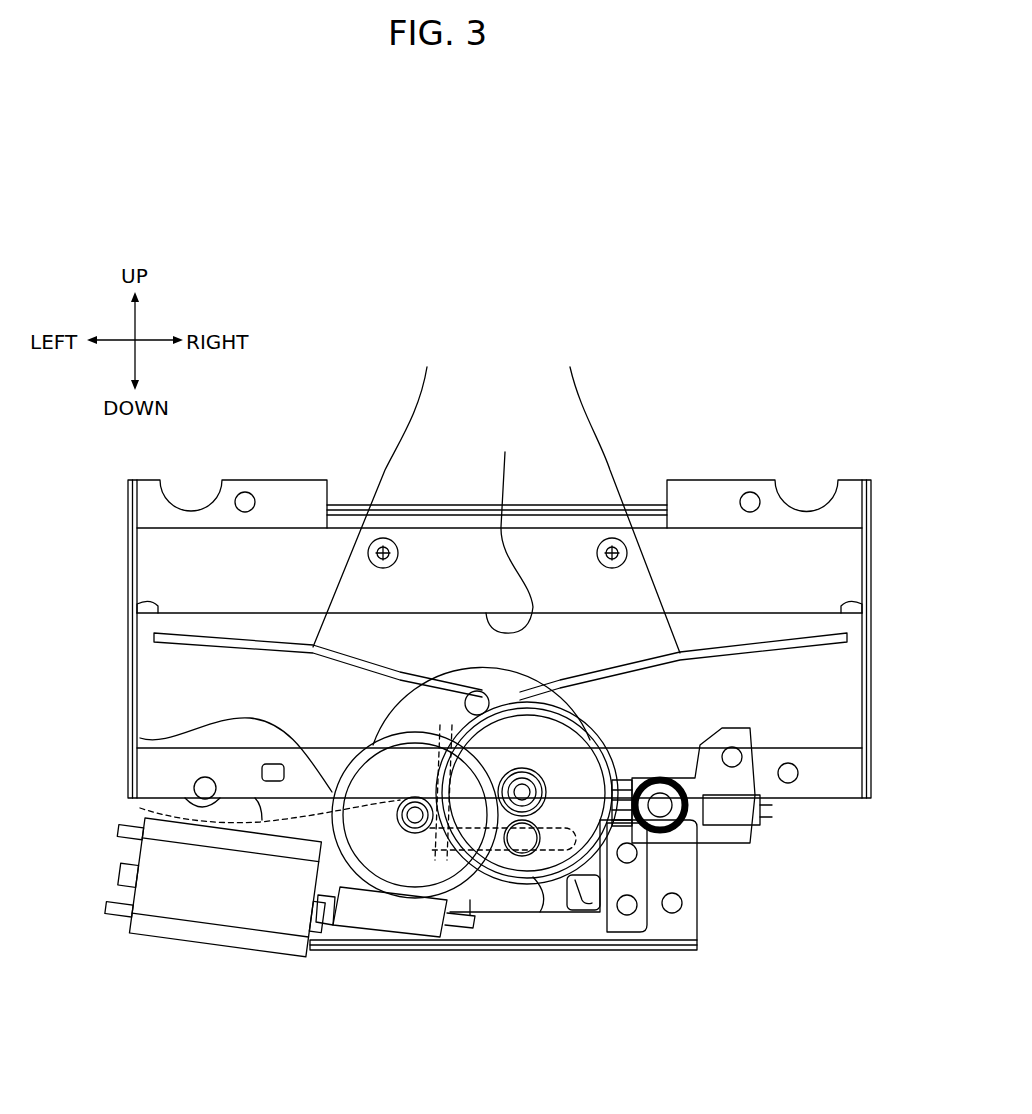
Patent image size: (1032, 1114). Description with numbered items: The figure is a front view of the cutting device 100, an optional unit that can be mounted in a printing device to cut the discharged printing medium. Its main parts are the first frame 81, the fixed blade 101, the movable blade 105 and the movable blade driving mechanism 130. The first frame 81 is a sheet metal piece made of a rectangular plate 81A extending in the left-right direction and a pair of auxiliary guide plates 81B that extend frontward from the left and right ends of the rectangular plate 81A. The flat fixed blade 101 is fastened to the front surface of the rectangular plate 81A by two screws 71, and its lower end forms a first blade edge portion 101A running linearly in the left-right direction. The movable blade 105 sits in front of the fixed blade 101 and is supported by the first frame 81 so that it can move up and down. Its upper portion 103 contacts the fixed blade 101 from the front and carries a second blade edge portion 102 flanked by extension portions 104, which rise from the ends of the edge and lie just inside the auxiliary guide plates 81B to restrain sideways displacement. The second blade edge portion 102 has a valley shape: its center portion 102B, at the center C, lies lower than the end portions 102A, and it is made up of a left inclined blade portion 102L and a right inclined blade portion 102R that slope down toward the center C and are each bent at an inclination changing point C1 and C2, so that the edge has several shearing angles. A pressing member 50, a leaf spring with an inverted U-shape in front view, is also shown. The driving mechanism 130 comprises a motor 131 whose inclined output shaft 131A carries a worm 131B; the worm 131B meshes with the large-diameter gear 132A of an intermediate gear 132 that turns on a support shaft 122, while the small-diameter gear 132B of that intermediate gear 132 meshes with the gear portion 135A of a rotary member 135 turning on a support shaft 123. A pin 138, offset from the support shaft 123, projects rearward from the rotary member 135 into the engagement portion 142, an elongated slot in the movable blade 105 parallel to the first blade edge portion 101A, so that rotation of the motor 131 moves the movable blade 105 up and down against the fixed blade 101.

The cutting device 100 is at (683, 345).
The fixed blade 101 is at (704, 525).
The first blade edge portion 101A is at (511, 530).
The second blade edge portion 102 is at (598, 345).
The left inclined blade portion 102L is at (384, 495).
The right inclined blade portion 102R is at (612, 498).
The end portions 102A is at (247, 632).
The center portion 102B is at (447, 663).
The upper portion 103 is at (795, 685).
The extension portions 104 is at (140, 612).
The movable blade 105 is at (801, 713).
The screws 71 is at (385, 538).
The inclination changing point C1 is at (320, 650).
The inclination changing point C2 is at (678, 650).
The center C is at (507, 680).
The pressing member 50 is at (620, 712).
The support shaft 123 is at (540, 790).
The support shaft 122 is at (418, 835).
The engagement portion 142 is at (508, 856).
The intermediate gear 132 is at (60, 712).
The large-diameter gear 132A is at (140, 738).
The small-diameter gear 132B is at (140, 808).
The motor 131 is at (220, 885).
The output shaft 131A is at (325, 912).
The worm 131B is at (395, 905).
The movable blade driving mechanism 130 is at (268, 988).
The rotary member 135 is at (597, 872).
The gear portion 135A is at (533, 870).
The pin 138 is at (585, 890).
The first frame 81 is at (820, 810).
The rectangular plate 81A is at (832, 773).
The auxiliary guide plates 81B is at (132, 548).